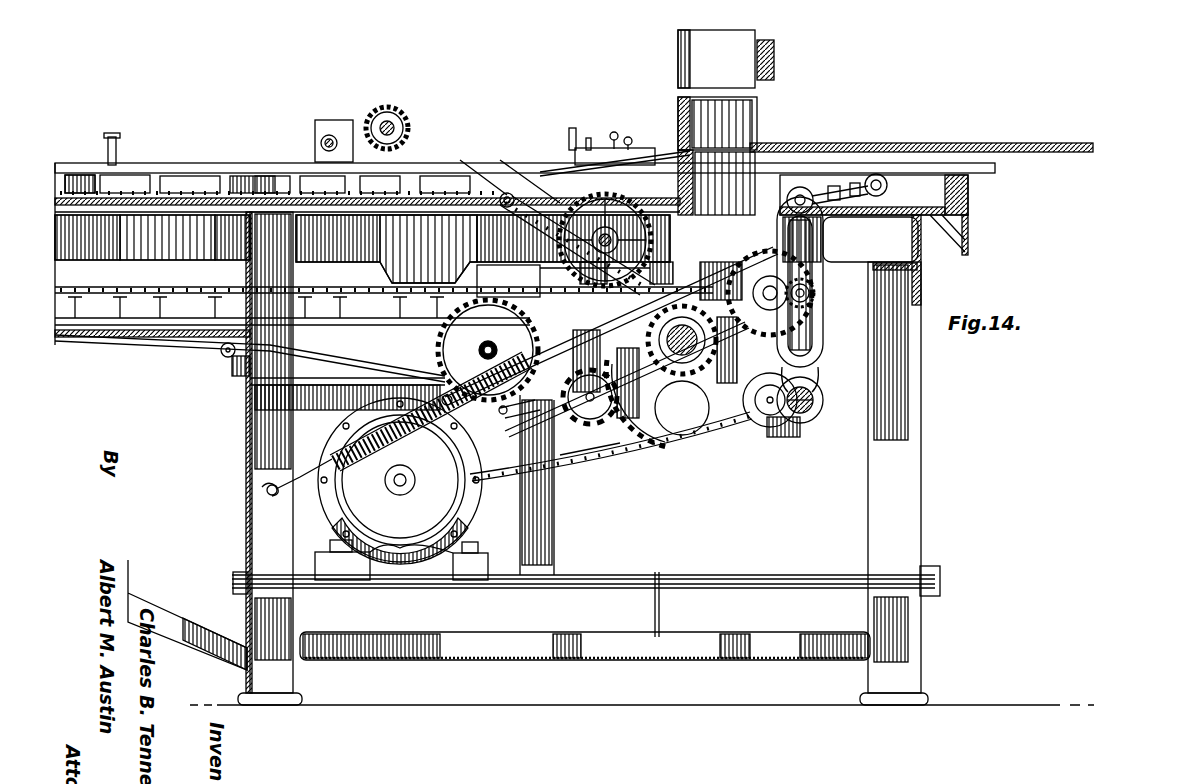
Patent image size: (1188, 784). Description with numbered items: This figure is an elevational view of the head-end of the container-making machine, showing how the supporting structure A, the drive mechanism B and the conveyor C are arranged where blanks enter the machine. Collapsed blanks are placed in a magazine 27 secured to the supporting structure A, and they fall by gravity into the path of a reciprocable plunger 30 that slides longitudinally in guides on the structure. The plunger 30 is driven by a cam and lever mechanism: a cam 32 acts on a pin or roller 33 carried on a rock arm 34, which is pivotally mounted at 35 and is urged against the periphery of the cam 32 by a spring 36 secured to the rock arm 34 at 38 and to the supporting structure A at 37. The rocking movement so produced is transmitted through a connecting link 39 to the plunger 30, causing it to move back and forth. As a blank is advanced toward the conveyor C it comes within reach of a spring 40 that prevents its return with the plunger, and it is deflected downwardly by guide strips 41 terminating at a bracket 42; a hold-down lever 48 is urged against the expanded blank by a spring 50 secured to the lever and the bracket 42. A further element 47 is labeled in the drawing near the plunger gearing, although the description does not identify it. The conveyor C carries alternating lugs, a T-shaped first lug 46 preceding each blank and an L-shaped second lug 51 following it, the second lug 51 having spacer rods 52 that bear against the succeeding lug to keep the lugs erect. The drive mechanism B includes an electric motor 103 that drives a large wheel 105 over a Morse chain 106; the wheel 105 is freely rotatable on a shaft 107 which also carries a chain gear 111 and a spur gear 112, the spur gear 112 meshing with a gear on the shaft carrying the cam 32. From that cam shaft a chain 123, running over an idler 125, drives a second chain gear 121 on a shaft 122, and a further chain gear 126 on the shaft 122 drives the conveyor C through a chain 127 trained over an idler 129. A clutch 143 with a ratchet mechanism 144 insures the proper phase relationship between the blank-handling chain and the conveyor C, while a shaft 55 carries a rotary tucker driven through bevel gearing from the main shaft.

The magazine 27 is at (680, 64).
The reciprocable plunger 30 is at (807, 165).
The cam 32 is at (740, 236).
The pin or roller 33 is at (810, 292).
The rock arm 34 is at (822, 343).
The pivot of rock arm 35 is at (810, 405).
The spring 36 is at (432, 426).
The spring attachment to supporting structure 37 is at (262, 488).
The spring attachment to rock arm 38 is at (760, 262).
The connecting link 39 is at (862, 190).
The spring 40 is at (686, 130).
The guide strips 41 is at (620, 162).
The bracket 42 is at (629, 138).
The first lug 46 is at (160, 178).
The gear wheel 47 is at (712, 205).
The hold-down lever 48 is at (589, 140).
The spring 50 is at (616, 132).
The second lug 51 is at (270, 178).
The spacer rods 52 is at (72, 165).
The shaft 55 is at (572, 128).
The electric motor or prime mover 103 is at (399, 533).
The large wheel 105 is at (708, 446).
The Morse chain 106 is at (606, 468).
The shaft 107 is at (690, 383).
The chain gear 111 is at (645, 342).
The spur gear 112 is at (766, 428).
The second chain gear 121 is at (516, 416).
The shaft 122 is at (452, 399).
The chain 123 is at (526, 432).
The idler 125 is at (580, 426).
The chain gear 126 is at (445, 345).
The chain 127 is at (330, 352).
The idler 129 is at (222, 357).
The clutch 143 is at (412, 133).
The ratchet mechanism 144 is at (392, 118).
The supporting structure A is at (235, 514).
The drive mechanism B is at (641, 486).
The conveyor C is at (348, 289).